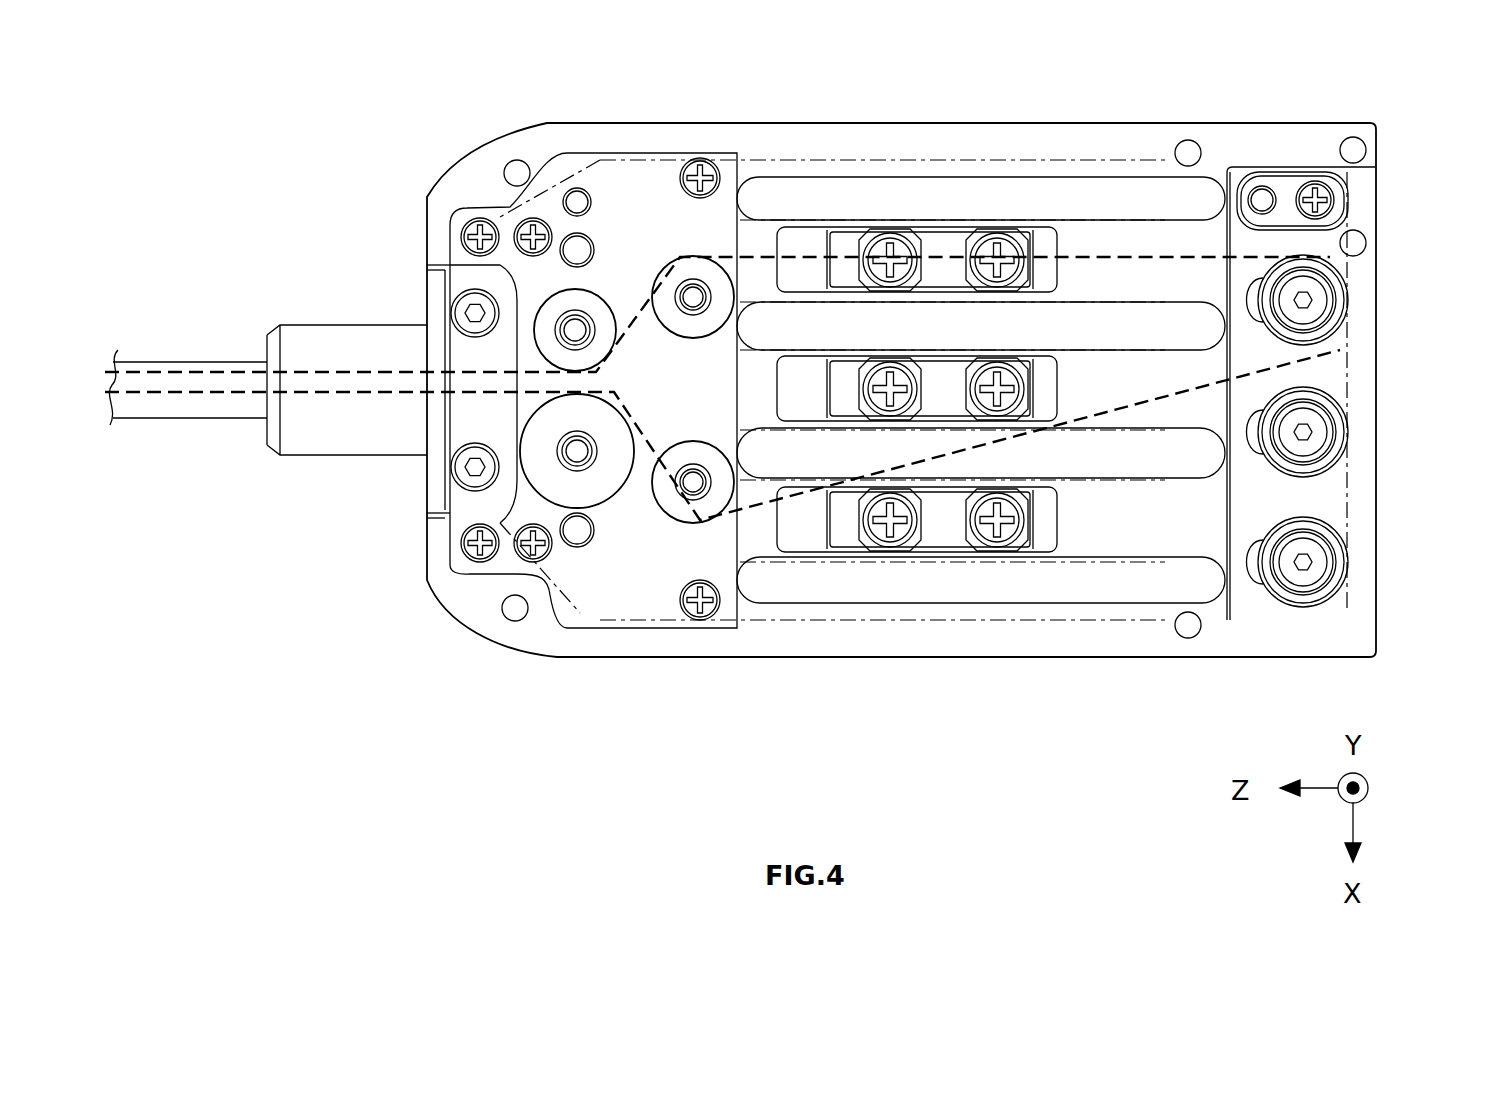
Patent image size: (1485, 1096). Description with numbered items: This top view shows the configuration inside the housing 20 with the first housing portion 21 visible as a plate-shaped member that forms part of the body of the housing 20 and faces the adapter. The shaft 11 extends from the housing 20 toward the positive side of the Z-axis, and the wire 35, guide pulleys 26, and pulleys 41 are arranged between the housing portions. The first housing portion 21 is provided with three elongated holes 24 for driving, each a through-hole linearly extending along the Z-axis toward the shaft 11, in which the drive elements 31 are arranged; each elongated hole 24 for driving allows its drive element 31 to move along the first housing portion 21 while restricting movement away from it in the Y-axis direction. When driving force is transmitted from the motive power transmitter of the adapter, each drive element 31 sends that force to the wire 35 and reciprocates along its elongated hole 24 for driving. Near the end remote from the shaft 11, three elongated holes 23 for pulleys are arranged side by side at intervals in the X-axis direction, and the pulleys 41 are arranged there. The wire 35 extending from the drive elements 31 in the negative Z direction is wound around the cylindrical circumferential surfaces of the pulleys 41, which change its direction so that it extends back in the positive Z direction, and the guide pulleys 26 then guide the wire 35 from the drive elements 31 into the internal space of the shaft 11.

The shaft 11 is at (188, 420).
The housing 20 is at (420, 133).
The first housing portion 21 is at (1055, 660).
The elongated hole for pulley 23 is at (1257, 277).
The elongated hole for driving 24 is at (758, 245).
The guide pulley 26 is at (597, 297).
The drive element 31 is at (938, 247).
The wire 35 is at (357, 395).
The pulley 41 is at (1353, 300).